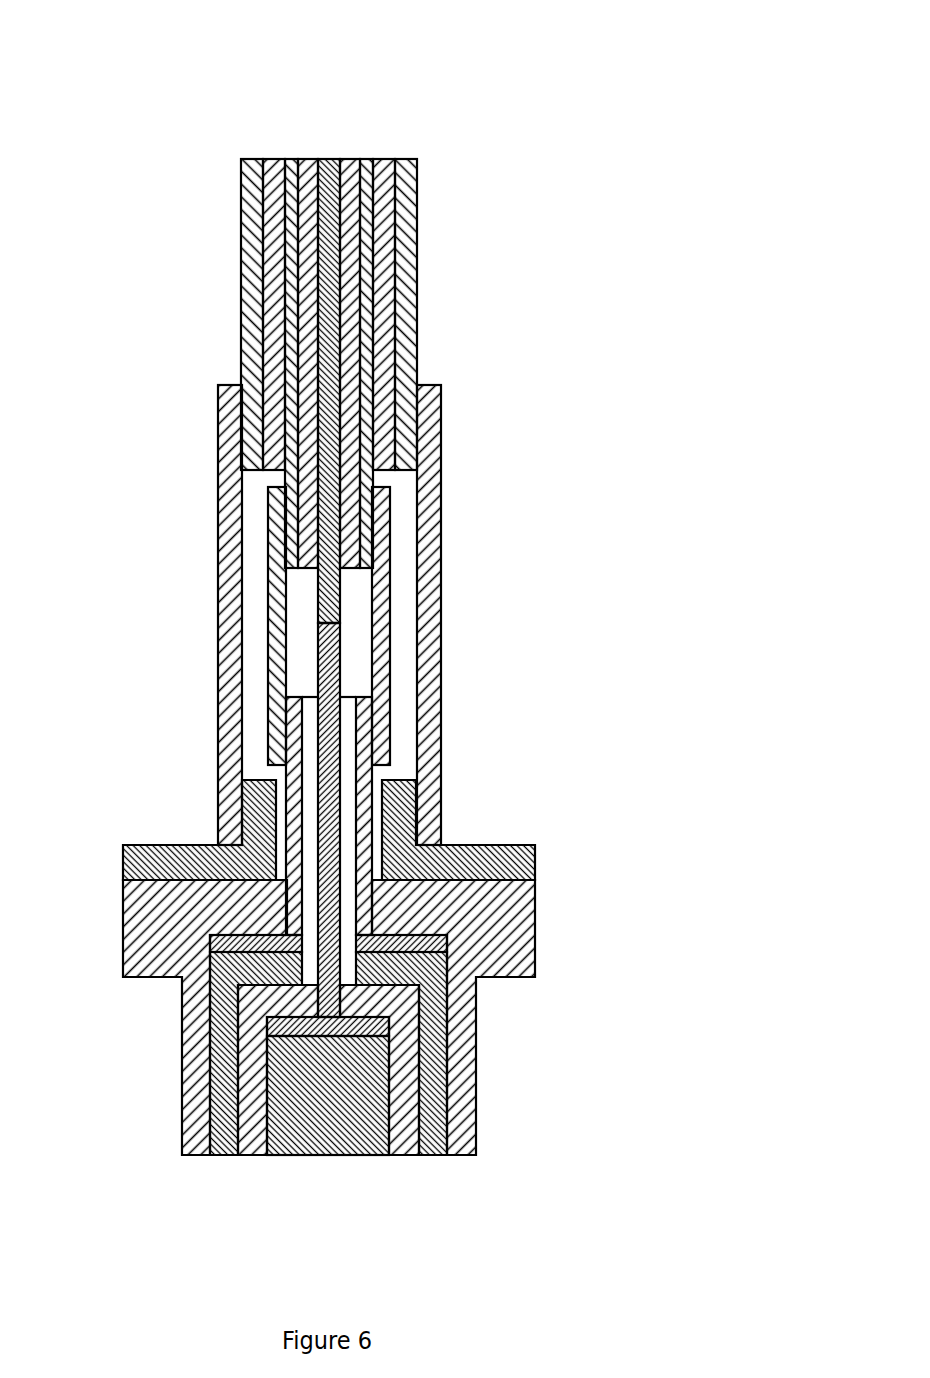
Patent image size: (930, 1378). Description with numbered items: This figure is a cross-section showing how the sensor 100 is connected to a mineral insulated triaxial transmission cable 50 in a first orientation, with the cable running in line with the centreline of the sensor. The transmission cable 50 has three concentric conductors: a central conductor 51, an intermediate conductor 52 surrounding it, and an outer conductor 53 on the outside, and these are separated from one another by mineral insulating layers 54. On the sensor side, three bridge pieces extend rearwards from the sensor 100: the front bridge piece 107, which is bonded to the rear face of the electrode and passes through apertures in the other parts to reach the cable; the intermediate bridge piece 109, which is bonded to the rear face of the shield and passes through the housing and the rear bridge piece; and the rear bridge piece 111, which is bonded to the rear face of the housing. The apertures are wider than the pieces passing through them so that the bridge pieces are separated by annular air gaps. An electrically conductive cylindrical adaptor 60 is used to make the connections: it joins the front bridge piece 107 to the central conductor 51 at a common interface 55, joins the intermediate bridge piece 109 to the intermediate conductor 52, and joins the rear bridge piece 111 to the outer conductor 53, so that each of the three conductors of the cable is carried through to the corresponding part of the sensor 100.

The mineral insulated triaxial transmission cable 50 is at (455, 130).
The central conductor 51 is at (323, 598).
The intermediate conductor 52 is at (367, 380).
The outer conductor 53 is at (405, 242).
The mineral insulating layers 54 is at (305, 297).
The common interface 55 is at (352, 626).
The electrically conductive cylindrical adaptor 60 is at (378, 579).
The sensor 100 is at (565, 892).
The front bridge piece 107 is at (327, 658).
The intermediate bridge piece 109 is at (290, 813).
The rear bridge piece 111 is at (490, 862).